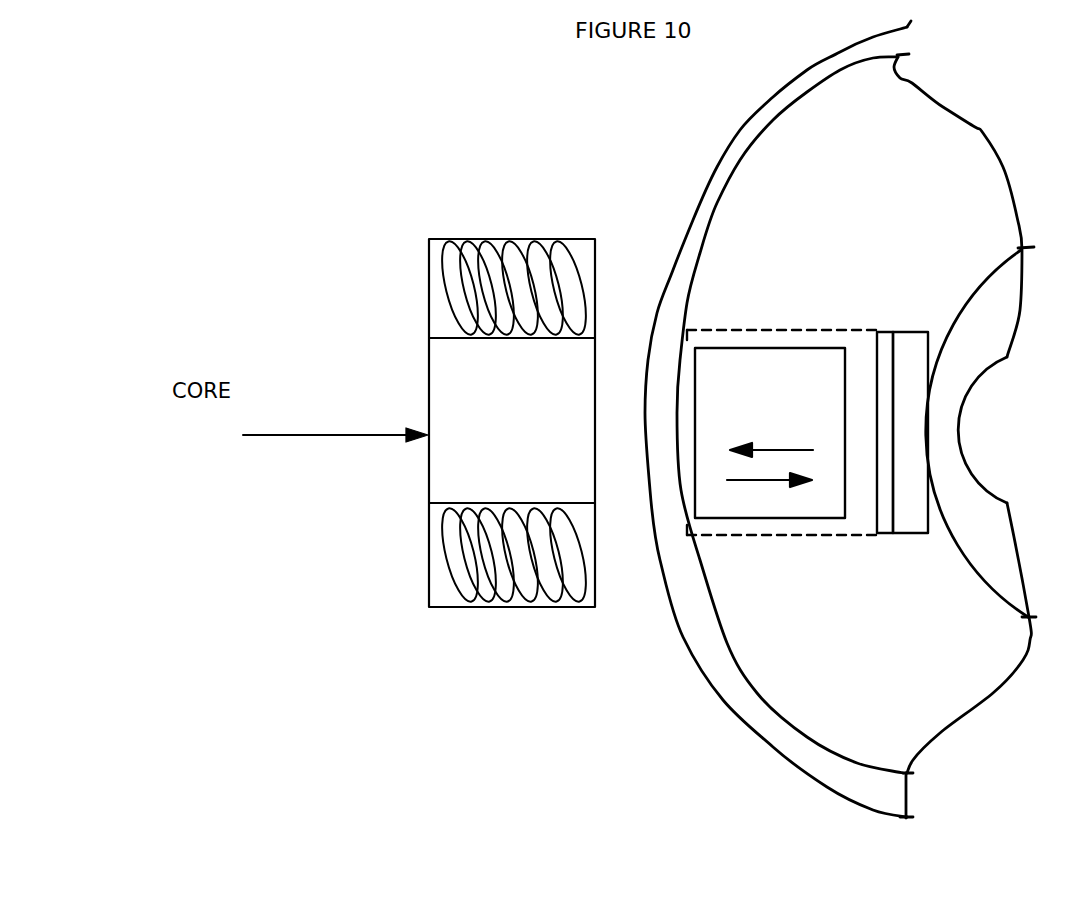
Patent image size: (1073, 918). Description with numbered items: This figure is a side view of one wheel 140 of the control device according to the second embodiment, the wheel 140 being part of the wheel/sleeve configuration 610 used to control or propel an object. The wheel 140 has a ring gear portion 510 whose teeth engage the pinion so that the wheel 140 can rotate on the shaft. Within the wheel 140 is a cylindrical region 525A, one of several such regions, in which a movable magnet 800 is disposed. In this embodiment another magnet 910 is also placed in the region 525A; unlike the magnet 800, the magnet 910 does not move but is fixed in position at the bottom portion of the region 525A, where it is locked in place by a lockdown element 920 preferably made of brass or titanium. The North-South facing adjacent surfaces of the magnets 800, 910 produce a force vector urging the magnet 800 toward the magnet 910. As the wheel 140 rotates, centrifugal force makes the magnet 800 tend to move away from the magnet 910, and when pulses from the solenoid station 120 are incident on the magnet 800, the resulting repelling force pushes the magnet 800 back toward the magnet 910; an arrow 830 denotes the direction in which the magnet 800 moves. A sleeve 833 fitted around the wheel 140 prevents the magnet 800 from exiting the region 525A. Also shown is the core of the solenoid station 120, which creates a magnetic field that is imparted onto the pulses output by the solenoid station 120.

The solenoid station 120 is at (415, 519).
The wheel 140 is at (729, 623).
The ring gear portion 510 is at (973, 291).
The cylindrical region 525A is at (854, 538).
The wheel/sleeve configuration 610 is at (729, 800).
The magnet 800 is at (767, 358).
The arrow 830 is at (783, 288).
The sleeve 833 is at (653, 308).
The magnet 910 is at (915, 316).
The lockdown element 920 is at (889, 542).